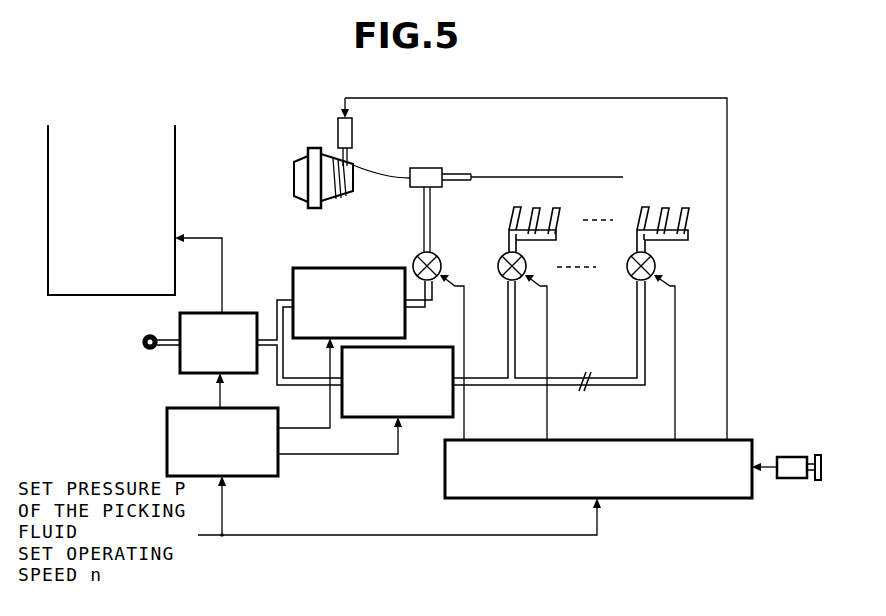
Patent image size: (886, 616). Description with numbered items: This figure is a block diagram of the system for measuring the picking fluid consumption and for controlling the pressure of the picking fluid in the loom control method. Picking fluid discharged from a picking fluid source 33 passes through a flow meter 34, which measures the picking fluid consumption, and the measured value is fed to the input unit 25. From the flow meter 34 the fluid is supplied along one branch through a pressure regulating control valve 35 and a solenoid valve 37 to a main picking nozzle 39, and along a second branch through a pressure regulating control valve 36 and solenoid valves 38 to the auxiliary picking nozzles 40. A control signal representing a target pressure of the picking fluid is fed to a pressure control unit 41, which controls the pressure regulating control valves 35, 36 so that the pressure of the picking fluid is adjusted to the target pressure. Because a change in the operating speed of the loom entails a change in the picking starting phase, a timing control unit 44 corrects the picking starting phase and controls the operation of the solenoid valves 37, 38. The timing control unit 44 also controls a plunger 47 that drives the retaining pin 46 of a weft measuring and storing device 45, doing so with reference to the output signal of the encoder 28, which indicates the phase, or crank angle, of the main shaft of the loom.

The input unit 25 is at (175, 152).
The encoder 28 is at (799, 457).
The picking fluid source 33 is at (142, 351).
The flow meter 34 is at (231, 313).
The pressure regulating control valve 35 is at (366, 268).
The pressure regulating control valve 36 is at (423, 347).
The solenoid valve 37 is at (441, 263).
The solenoid valves 38 is at (501, 279).
The main picking nozzle 39 is at (426, 168).
The auxiliary picking nozzles 40 is at (511, 212).
The pressure control unit 41 is at (167, 426).
The timing control unit 44 is at (616, 440).
The weft measuring and storing device 45 is at (300, 160).
The retaining pin 46 is at (350, 161).
The plunger 47 is at (336, 128).